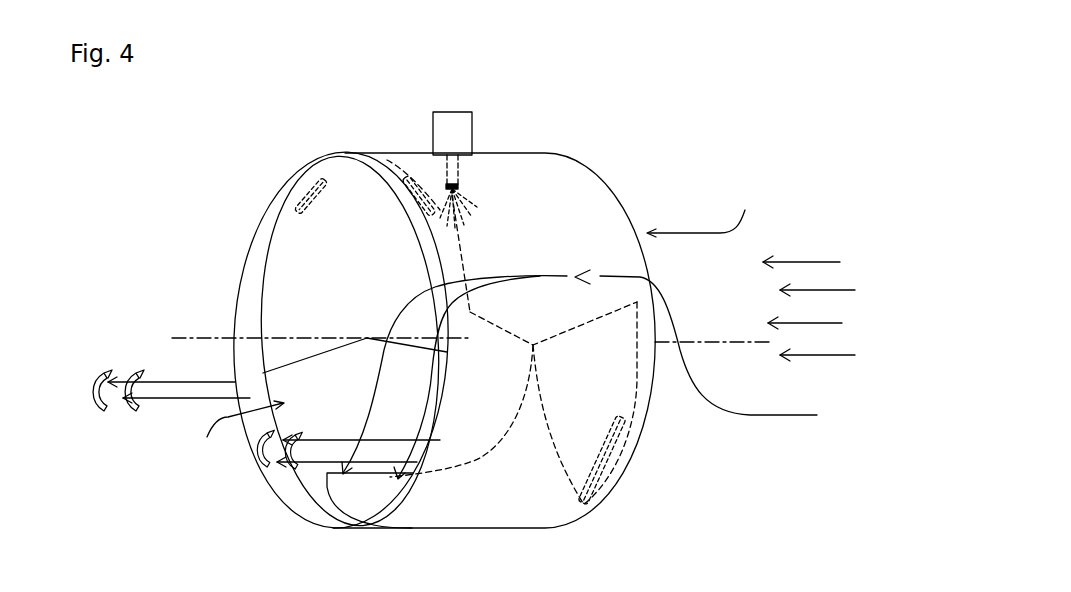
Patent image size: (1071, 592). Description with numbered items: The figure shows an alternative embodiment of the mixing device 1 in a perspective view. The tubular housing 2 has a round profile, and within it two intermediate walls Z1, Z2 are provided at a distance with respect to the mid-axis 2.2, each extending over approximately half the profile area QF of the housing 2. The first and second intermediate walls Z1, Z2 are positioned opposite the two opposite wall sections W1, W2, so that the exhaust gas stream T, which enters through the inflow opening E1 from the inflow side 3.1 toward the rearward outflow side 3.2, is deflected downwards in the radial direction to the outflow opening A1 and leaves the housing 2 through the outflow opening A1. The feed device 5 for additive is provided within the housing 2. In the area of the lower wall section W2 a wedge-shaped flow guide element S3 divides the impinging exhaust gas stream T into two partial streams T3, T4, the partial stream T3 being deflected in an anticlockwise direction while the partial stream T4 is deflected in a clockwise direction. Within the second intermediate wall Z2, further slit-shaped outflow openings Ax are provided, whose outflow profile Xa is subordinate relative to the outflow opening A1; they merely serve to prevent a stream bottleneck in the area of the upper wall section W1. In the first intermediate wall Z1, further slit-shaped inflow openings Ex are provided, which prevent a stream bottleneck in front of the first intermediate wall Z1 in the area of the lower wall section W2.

The mixing device 1 is at (268, 108).
The tubular housing 2 is at (494, 318).
The profile area QF is at (536, 167).
The feed device 5 is at (458, 143).
The upper wall section W1 is at (353, 130).
The lower wall section W2 is at (355, 547).
The inflow opening E1 is at (636, 214).
The inflow side 3.1 is at (703, 216).
The outflow side 3.2 is at (214, 250).
The exhaust gas stream T is at (815, 256).
The partial stream T3 is at (126, 354).
The partial stream T4 is at (418, 414).
The mid-axis 2.2 is at (173, 338).
The first intermediate wall Z1 is at (627, 395).
The second intermediate wall Z2 is at (288, 237).
The slit-shaped inflow openings Ex is at (607, 473).
The slit-shaped outflow openings Ax is at (367, 208).
The outflow profile Xa is at (311, 196).
The outflow opening A1 is at (239, 429).
The wedge-shaped flow guide element S3 is at (328, 517).